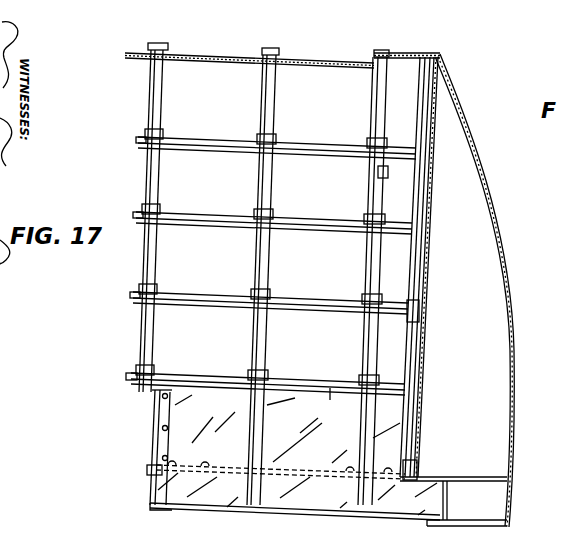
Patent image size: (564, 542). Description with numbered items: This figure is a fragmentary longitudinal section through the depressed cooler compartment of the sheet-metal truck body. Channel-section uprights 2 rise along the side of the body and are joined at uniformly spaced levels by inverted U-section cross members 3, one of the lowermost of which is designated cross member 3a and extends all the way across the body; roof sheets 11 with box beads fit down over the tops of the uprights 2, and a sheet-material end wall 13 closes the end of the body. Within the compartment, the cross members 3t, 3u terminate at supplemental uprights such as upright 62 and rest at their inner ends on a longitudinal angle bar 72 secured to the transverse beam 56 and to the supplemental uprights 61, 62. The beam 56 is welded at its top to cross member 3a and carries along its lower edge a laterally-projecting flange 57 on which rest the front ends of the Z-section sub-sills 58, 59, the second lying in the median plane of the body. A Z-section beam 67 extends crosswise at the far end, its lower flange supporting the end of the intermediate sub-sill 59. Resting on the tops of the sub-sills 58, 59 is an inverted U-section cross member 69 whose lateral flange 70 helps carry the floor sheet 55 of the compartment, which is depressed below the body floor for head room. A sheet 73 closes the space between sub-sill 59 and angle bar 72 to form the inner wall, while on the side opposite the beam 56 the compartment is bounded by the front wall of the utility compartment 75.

The upright 2 is at (150, 98).
The cross member 3 is at (150, 129).
The lowermost cross member 3a is at (136, 375).
The cross member 3u is at (275, 138).
The cross member 3t is at (372, 137).
The roof sheet 11 is at (217, 57).
The rear end wall 13 is at (428, 282).
The floor of the cooler compartment 55 is at (252, 451).
The transverse beam 56 is at (153, 428).
The laterally-projecting flange 57 is at (170, 509).
The sub-sill 58 is at (497, 493).
The sub-sill 59 is at (207, 490).
The supplemental upright 61 is at (418, 204).
The supplemental upright 62 is at (378, 173).
The beam 67 is at (448, 498).
The cross member 69 is at (400, 464).
The lateral flange 70 is at (384, 496).
The longitudinal angle bar 72 is at (213, 138).
The sheet 73 is at (330, 397).
The utility compartment 75 is at (511, 250).